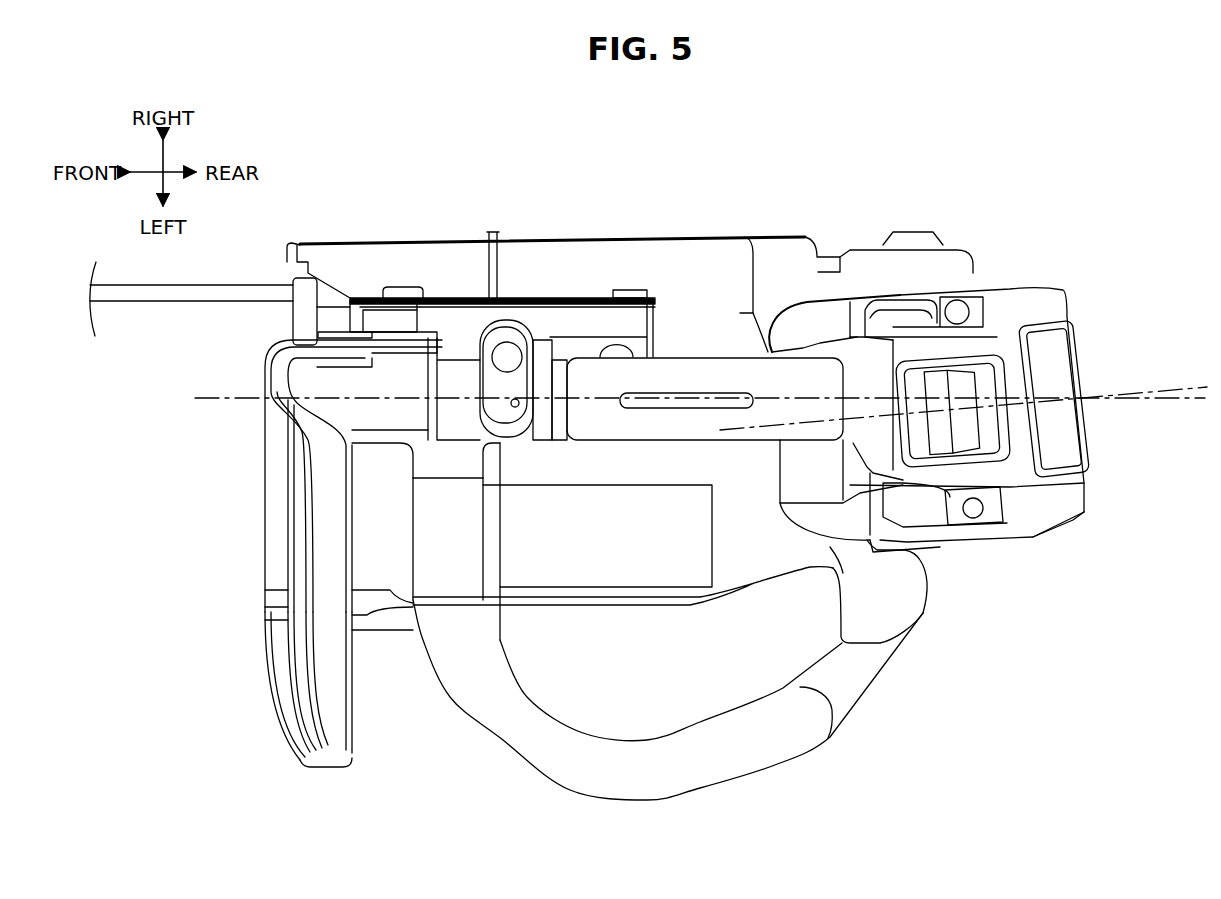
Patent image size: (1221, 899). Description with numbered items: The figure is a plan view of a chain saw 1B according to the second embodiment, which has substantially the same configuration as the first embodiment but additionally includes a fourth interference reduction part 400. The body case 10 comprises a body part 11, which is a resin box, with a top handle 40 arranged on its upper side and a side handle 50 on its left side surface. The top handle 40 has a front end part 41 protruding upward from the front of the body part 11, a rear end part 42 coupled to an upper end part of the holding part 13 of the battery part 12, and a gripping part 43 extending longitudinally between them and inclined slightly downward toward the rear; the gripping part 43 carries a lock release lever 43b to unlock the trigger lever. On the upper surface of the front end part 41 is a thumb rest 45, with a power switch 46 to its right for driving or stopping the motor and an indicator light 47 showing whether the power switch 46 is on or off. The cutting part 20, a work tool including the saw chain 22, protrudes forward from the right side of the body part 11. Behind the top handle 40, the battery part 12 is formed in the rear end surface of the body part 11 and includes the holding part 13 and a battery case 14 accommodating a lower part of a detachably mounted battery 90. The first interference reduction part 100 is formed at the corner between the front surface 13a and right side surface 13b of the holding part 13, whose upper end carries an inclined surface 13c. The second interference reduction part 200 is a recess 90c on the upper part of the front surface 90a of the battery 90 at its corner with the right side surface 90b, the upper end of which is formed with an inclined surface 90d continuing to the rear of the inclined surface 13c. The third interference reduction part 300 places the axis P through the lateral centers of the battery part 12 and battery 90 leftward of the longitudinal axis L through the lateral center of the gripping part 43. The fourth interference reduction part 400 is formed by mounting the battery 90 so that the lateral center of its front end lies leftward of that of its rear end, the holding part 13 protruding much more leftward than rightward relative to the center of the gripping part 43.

The chain saw 1B is at (708, 104).
The body case 10 is at (443, 222).
The body part 11 is at (633, 260).
The battery part 12 is at (790, 553).
The holding part 13 is at (845, 300).
The front surface 13a is at (773, 322).
The right side surface 13b is at (857, 275).
The inclined surface 13c is at (885, 246).
The battery case 14 is at (900, 550).
The cutting part 20 is at (240, 270).
The saw chain 22 is at (173, 293).
The top handle 40 is at (662, 458).
The front end part 41 is at (343, 385).
The rear end part 42 is at (823, 430).
The gripping part 43 is at (718, 373).
The lock release lever 43b is at (683, 391).
The thumb rest 45 is at (500, 413).
The power switch 46 is at (507, 346).
The indicator light 47 is at (516, 410).
The side handle 50 is at (517, 740).
The battery 90 is at (1047, 320).
The front surface 90a is at (915, 310).
The right side surface 90b is at (1002, 270).
The recess 90c is at (962, 300).
The inclined surface 90d is at (940, 300).
The first interference reduction part 100 is at (882, 298).
The second interference reduction part 200 is at (976, 284).
The third interference reduction part 300 is at (1097, 368).
The fourth interference reduction part 400 is at (802, 289).
The axis P is at (1170, 393).
The axis L is at (1140, 406).